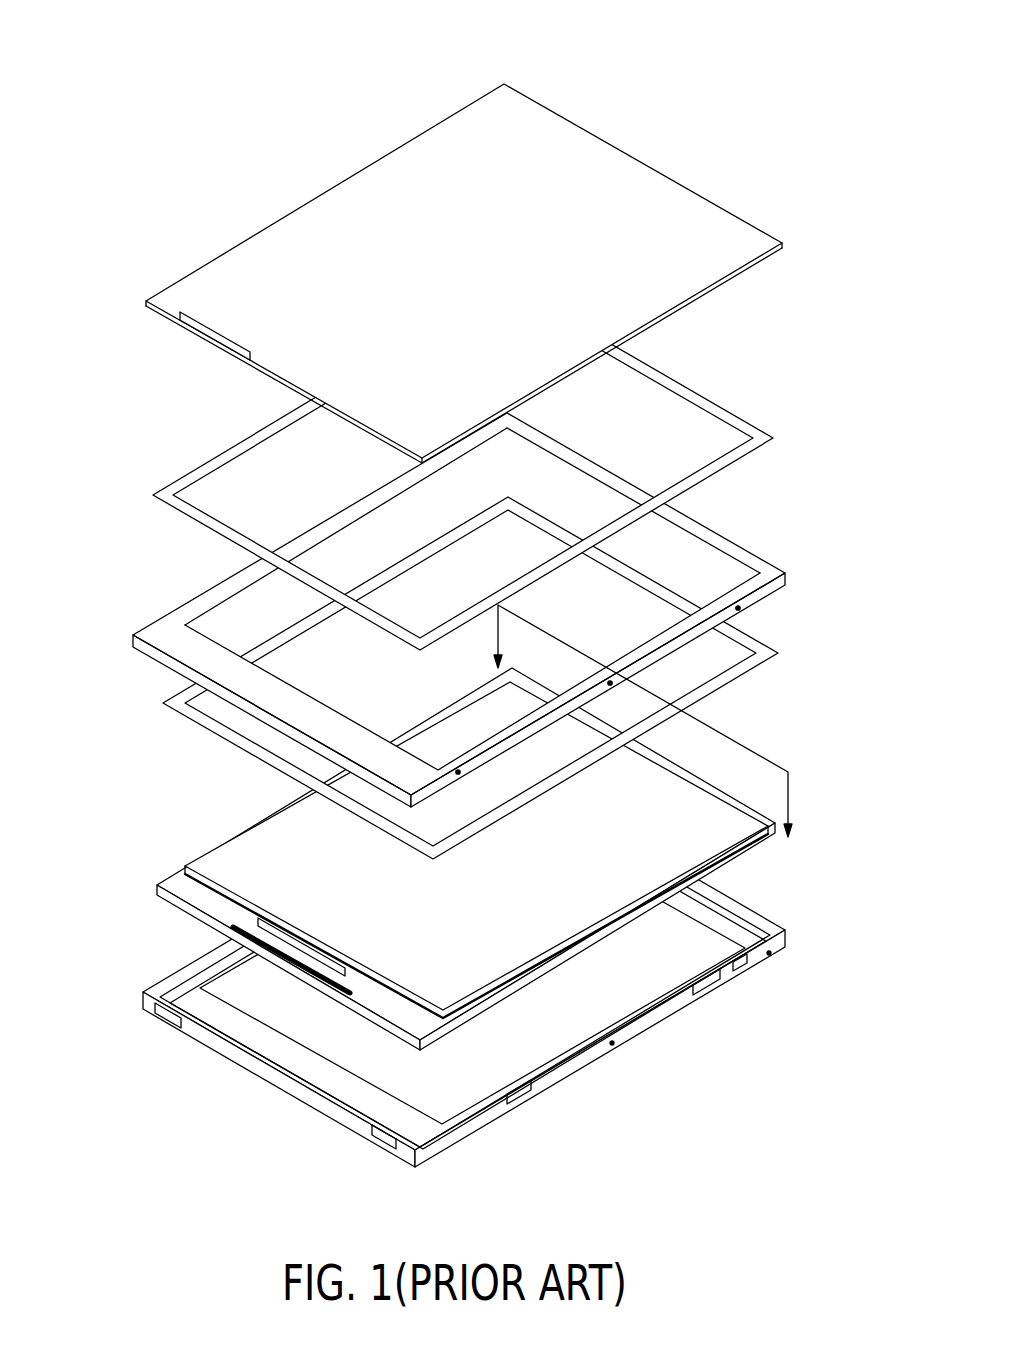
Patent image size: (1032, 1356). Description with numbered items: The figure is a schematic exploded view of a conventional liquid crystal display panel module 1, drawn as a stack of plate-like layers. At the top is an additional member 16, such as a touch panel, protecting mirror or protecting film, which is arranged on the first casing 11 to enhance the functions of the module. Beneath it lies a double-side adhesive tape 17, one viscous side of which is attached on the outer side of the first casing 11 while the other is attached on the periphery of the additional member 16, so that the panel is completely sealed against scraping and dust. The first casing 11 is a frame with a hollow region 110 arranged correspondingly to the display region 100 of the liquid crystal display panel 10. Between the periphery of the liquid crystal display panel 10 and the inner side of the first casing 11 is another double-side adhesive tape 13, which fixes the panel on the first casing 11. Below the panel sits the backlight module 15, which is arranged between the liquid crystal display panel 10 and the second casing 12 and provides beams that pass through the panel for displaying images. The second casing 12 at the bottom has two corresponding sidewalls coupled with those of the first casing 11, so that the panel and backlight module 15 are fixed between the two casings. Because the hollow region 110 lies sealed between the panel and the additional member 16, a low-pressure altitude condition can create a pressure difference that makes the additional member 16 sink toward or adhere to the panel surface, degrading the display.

The display panel module 1 is at (489, 609).
The liquid crystal display panel 10 is at (180, 872).
The display region 100 is at (283, 867).
The first casing 11 is at (165, 632).
The hollow region 110 is at (697, 568).
The second casing 12 is at (547, 1087).
The double-side adhesive tape 13 is at (742, 673).
The backlight module 15 is at (648, 953).
The additional member 16 is at (309, 261).
The double-side adhesive tape 17 is at (175, 498).